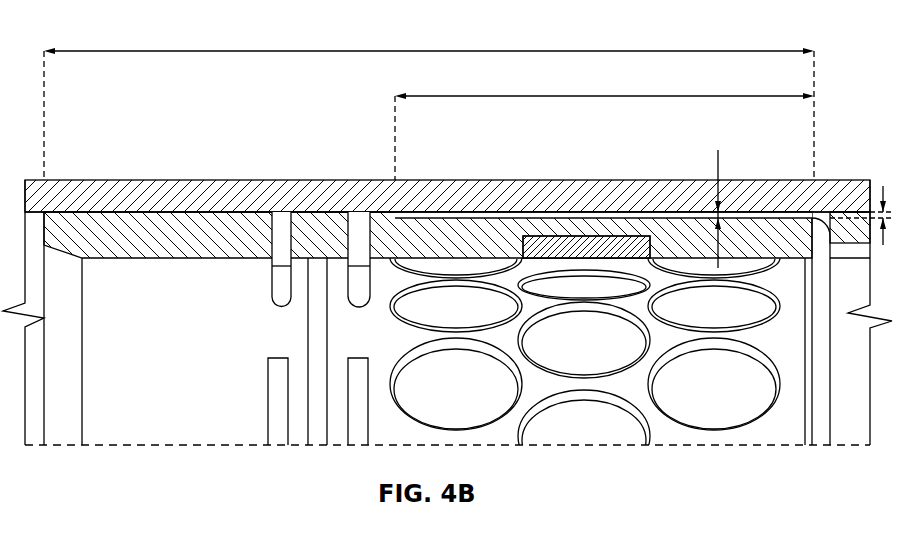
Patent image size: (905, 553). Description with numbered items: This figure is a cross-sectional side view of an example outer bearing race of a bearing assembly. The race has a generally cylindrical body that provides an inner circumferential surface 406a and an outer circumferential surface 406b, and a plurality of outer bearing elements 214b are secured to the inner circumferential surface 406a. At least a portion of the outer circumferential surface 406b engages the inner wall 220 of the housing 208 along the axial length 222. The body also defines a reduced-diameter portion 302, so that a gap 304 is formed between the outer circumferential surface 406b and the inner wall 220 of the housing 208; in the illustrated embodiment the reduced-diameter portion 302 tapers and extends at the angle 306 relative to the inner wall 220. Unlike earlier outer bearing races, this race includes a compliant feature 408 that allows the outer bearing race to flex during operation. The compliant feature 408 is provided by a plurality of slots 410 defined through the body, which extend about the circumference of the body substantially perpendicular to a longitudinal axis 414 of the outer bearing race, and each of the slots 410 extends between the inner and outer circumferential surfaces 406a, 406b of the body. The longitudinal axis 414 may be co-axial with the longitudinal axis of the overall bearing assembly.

The axial length 222 is at (431, 51).
The reduced-diameter portion 302 is at (606, 97).
The housing 208 is at (821, 180).
The angle 306 is at (883, 186).
The compliant feature 408 is at (329, 204).
The slots 410 is at (275, 211).
The outer circumferential surface 406b is at (423, 211).
The inner circumferential surface 406a is at (509, 212).
The outer bearing elements 214b is at (602, 247).
The gap 304 is at (704, 196).
The inner wall 220 is at (778, 216).
The longitudinal axis 414 is at (95, 446).